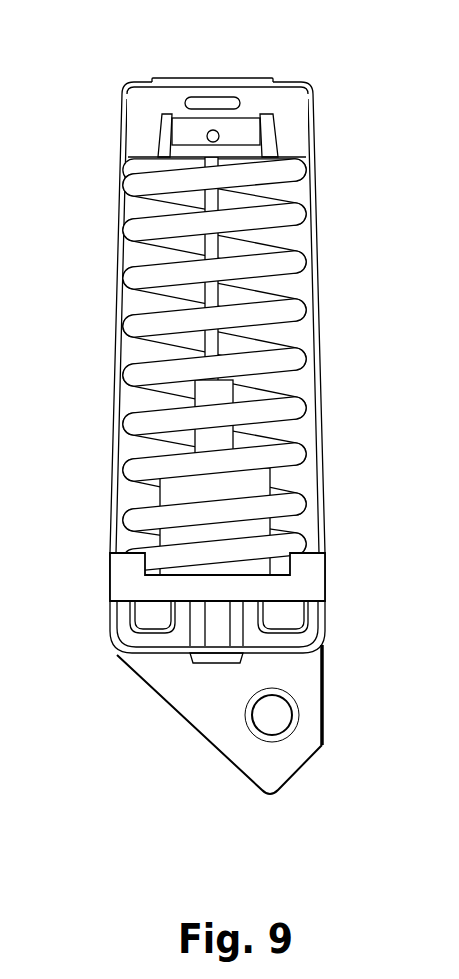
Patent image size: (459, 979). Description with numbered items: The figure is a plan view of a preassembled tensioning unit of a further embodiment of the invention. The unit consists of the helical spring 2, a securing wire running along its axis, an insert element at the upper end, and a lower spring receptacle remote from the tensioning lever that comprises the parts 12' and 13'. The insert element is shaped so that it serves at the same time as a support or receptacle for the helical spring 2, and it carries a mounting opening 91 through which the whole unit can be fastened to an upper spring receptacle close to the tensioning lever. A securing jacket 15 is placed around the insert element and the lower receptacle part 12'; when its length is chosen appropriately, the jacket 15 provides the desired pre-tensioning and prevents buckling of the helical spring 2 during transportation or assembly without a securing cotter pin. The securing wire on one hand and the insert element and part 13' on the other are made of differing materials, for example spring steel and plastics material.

The helical spring 2 is at (230, 367).
The lower spring receptacle part 12' is at (219, 719).
The lower spring receptacle part 13' is at (286, 479).
The securing jacket 15 is at (117, 303).
The mounting opening 91 is at (205, 100).